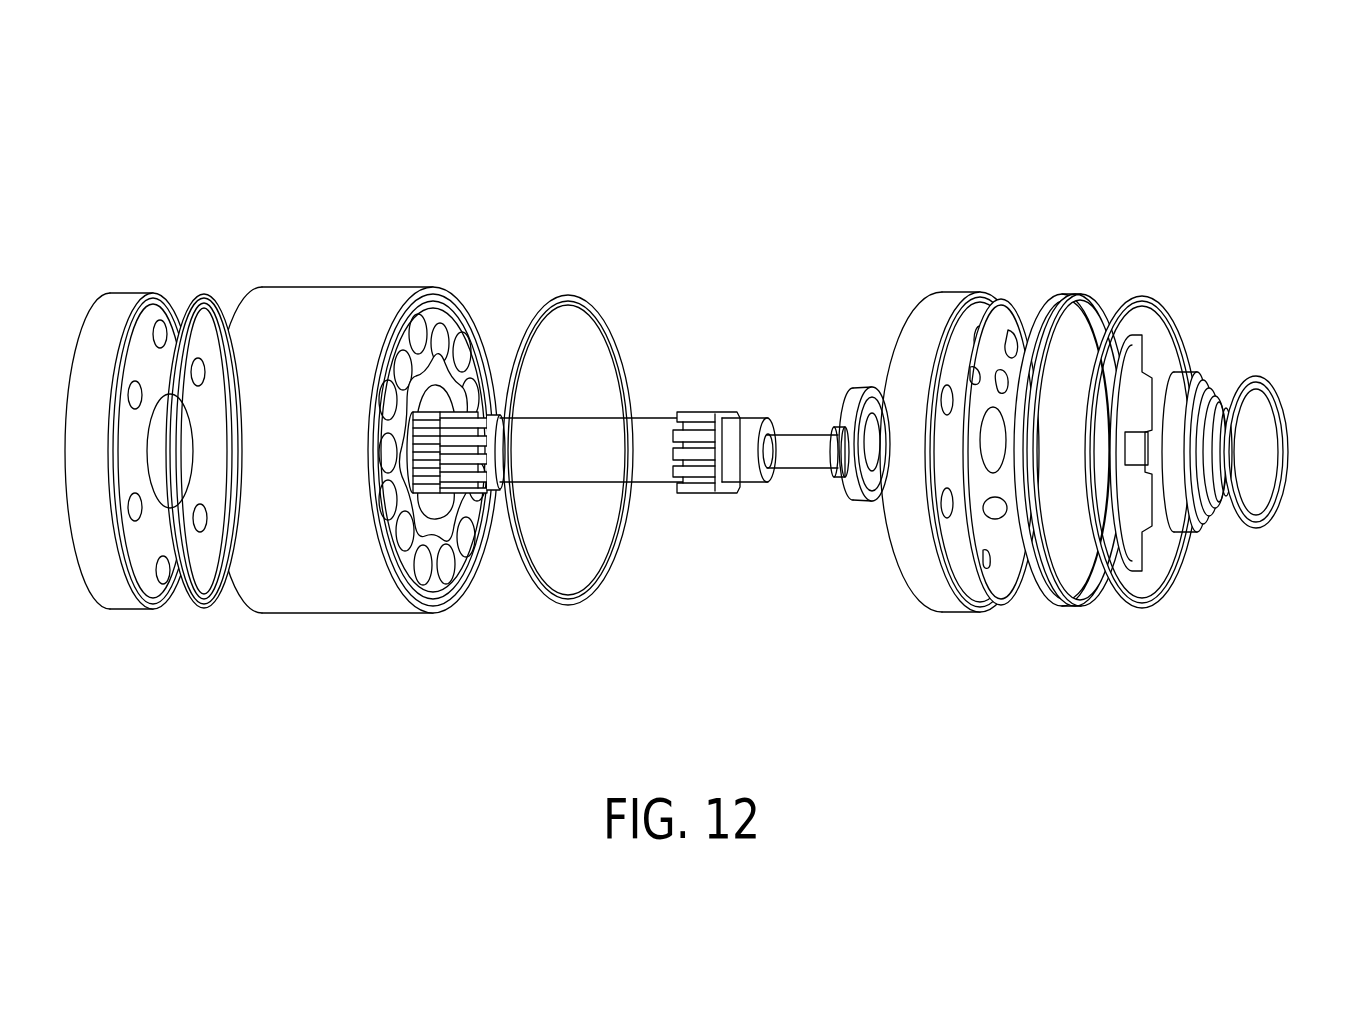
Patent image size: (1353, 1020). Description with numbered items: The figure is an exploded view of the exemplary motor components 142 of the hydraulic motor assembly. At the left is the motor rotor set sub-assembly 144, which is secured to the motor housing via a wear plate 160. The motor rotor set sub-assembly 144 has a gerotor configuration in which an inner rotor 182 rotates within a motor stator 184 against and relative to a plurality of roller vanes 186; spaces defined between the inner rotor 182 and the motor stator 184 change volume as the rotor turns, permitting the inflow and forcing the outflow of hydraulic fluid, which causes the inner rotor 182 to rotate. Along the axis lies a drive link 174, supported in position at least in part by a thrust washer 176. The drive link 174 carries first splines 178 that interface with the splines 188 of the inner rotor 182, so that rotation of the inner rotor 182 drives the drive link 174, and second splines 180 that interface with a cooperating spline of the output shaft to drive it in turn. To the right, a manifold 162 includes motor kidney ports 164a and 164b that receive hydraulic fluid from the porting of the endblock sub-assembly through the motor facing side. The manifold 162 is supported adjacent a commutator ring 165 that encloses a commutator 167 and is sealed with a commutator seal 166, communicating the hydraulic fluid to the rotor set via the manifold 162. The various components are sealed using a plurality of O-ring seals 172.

The motor components 142 is at (812, 178).
The motor rotor set sub-assembly 144 is at (339, 253).
The wear plate 160 is at (115, 298).
The manifold 162 is at (945, 298).
The motor kidney port 164a is at (995, 335).
The motor kidney port 164b is at (1037, 300).
The commutator ring 165 is at (1062, 607).
The commutator seal 166 is at (1270, 390).
The commutator 167 is at (1212, 540).
The O-ring seals 172 is at (553, 605).
The drive link 174 is at (650, 425).
The thrust washer 176 is at (868, 382).
The first splines 178 is at (690, 495).
The second splines 180 is at (478, 400).
The inner rotor 182 is at (447, 550).
The motor stator 184 is at (355, 459).
The roller vanes 186 is at (441, 338).
The splines 188 is at (420, 458).